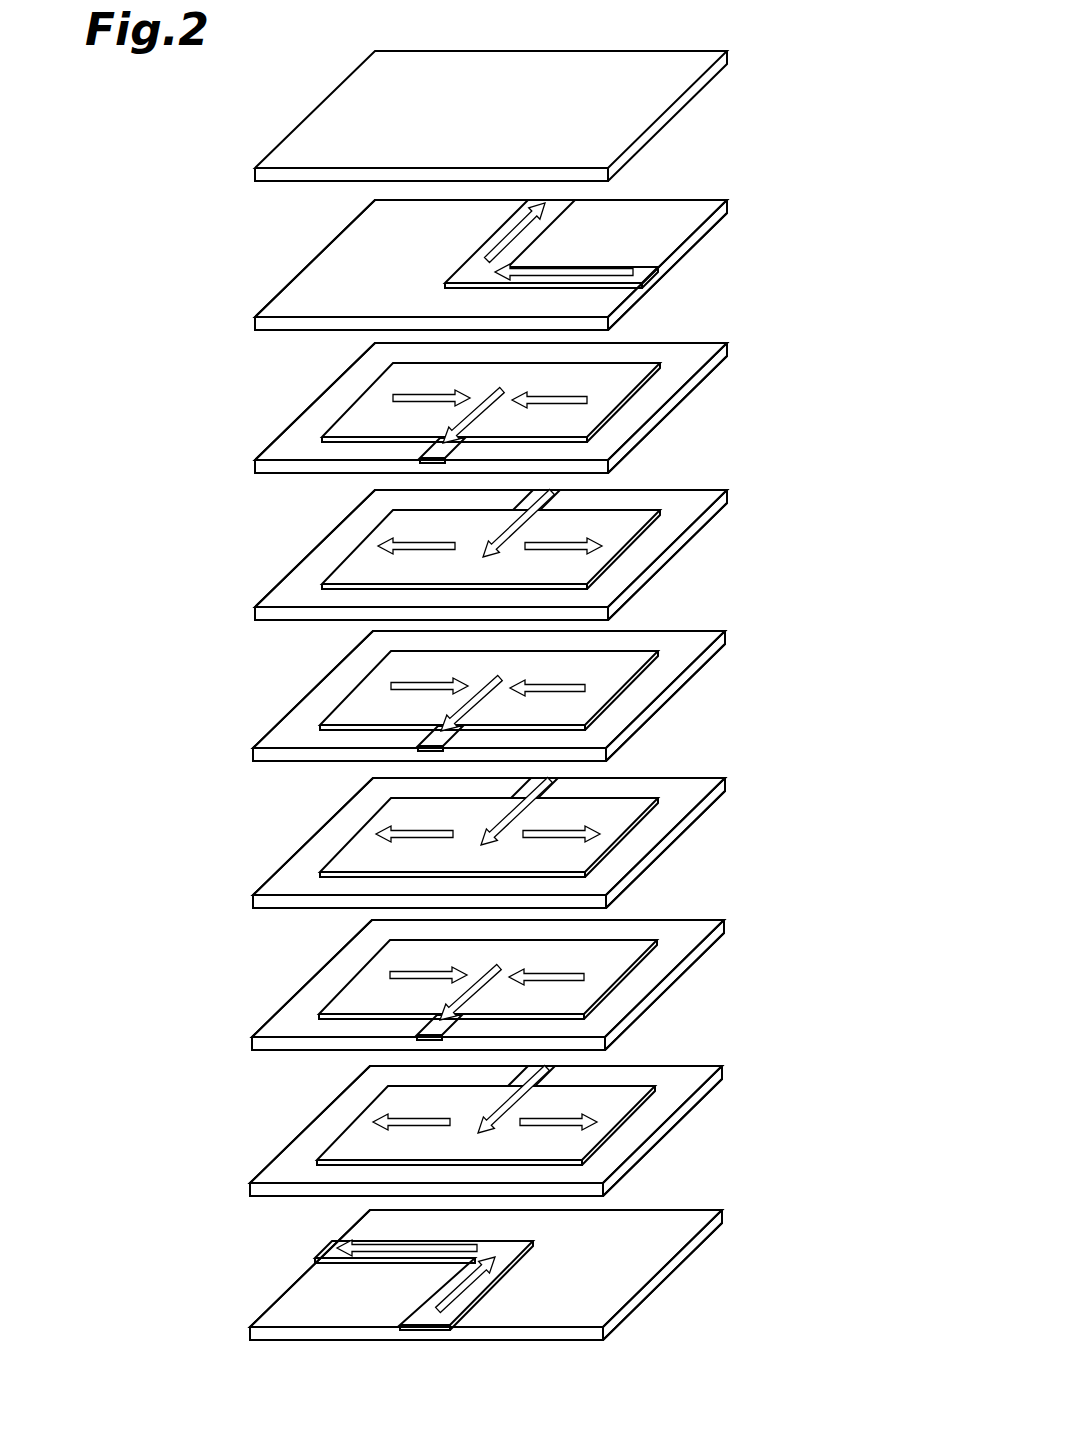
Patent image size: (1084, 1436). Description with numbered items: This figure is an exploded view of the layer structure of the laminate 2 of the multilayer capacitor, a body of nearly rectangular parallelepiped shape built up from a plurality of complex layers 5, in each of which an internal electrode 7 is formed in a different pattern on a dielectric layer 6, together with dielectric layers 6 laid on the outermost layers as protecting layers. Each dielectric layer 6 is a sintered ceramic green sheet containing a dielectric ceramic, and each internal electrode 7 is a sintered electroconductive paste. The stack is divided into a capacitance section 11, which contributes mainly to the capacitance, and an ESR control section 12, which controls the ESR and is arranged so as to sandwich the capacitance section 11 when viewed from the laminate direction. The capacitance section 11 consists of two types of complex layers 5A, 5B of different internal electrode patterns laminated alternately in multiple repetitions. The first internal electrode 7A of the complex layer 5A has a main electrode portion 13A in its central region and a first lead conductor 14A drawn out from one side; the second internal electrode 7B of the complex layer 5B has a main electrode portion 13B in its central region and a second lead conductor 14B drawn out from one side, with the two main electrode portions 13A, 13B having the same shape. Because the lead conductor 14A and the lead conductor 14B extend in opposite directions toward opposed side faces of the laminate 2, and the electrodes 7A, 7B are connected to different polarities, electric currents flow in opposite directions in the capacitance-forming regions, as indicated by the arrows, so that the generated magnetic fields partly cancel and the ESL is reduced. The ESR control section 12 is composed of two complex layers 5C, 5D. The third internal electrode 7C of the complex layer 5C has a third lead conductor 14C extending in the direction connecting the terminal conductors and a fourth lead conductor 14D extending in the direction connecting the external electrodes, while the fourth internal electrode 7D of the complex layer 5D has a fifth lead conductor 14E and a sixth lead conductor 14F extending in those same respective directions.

The laminate 2 is at (208, 43).
The complex layer 5 is at (576, 771).
The complex layer 5A is at (548, 684).
The complex layer 5B is at (547, 822).
The complex layer 5C is at (546, 1275).
The complex layer 5D is at (550, 265).
The dielectric layer 6 is at (576, 697).
The internal electrode 7 is at (576, 771).
The first internal electrode 7A is at (496, 679).
The second internal electrode 7B is at (495, 807).
The third internal electrode 7C is at (492, 1273).
The fourth internal electrode 7D is at (533, 244).
The capacitance section 11 is at (852, 345).
The ESR control section 12 is at (852, 203).
The main electrode portion 13A is at (521, 666).
The main electrode portion 13B is at (520, 804).
The first lead conductor 14A is at (426, 713).
The second lead conductor 14B is at (573, 798).
The third lead conductor 14C is at (503, 1285).
The fourth lead conductor 14D is at (403, 1275).
The fifth lead conductor 14E is at (554, 233).
The sixth lead conductor 14F is at (594, 244).